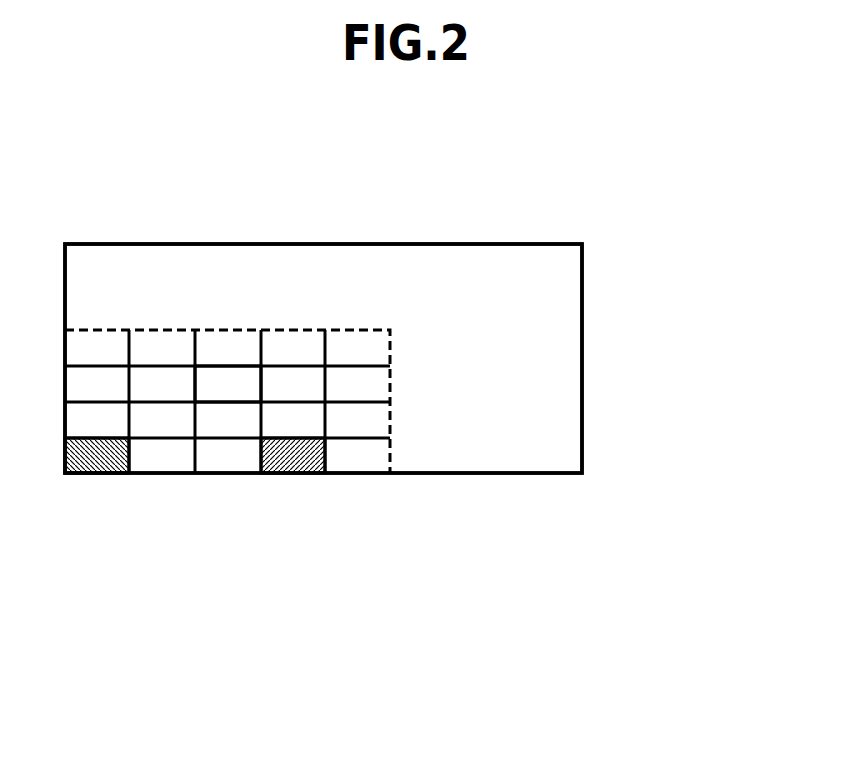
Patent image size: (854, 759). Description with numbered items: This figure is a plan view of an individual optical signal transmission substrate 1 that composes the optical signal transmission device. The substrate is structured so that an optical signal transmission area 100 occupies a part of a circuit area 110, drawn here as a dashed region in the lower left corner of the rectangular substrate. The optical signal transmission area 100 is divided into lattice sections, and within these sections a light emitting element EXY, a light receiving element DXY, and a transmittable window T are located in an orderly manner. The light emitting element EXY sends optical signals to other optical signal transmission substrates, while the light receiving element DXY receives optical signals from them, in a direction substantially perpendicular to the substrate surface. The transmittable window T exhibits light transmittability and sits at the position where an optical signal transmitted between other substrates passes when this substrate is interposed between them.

The optical signal transmission substrate 1 is at (432, 668).
The circuit area 110 is at (467, 460).
The optical signal transmission area 100 is at (357, 335).
The transmittable window T is at (216, 373).
The light receiving element DXY is at (290, 475).
The light emitting element EXY is at (95, 475).